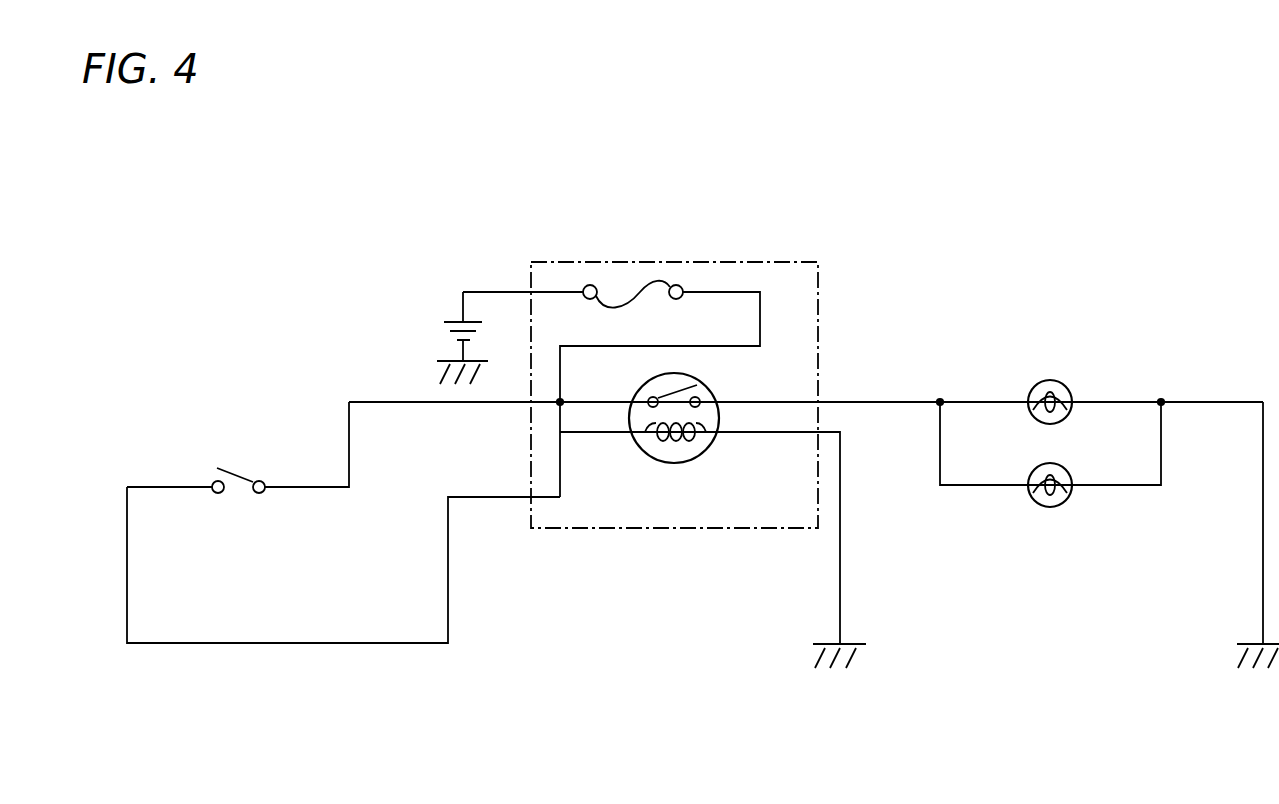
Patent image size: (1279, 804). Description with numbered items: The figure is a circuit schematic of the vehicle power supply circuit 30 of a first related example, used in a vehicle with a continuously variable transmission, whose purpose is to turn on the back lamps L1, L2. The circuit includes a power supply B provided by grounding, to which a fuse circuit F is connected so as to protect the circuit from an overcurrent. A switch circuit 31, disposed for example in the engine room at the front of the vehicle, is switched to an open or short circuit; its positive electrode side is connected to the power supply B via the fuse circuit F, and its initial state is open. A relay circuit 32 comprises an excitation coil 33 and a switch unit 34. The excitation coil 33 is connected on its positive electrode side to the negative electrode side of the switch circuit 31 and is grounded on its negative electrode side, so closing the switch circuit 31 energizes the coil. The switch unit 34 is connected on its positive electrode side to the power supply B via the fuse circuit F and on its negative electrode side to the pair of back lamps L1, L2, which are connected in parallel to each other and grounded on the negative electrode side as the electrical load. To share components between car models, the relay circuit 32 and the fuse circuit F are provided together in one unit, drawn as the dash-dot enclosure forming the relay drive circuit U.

The vehicle power supply circuit 30 is at (308, 222).
The switch circuit 31 is at (240, 473).
The relay circuit 32 is at (743, 313).
The excitation coil 33 is at (693, 424).
The switch unit 34 is at (678, 388).
The power supply B is at (455, 318).
The fuse circuit F is at (629, 293).
The relay drive circuit U is at (685, 262).
The back lamp L1 is at (1050, 380).
The back lamp L2 is at (1050, 507).